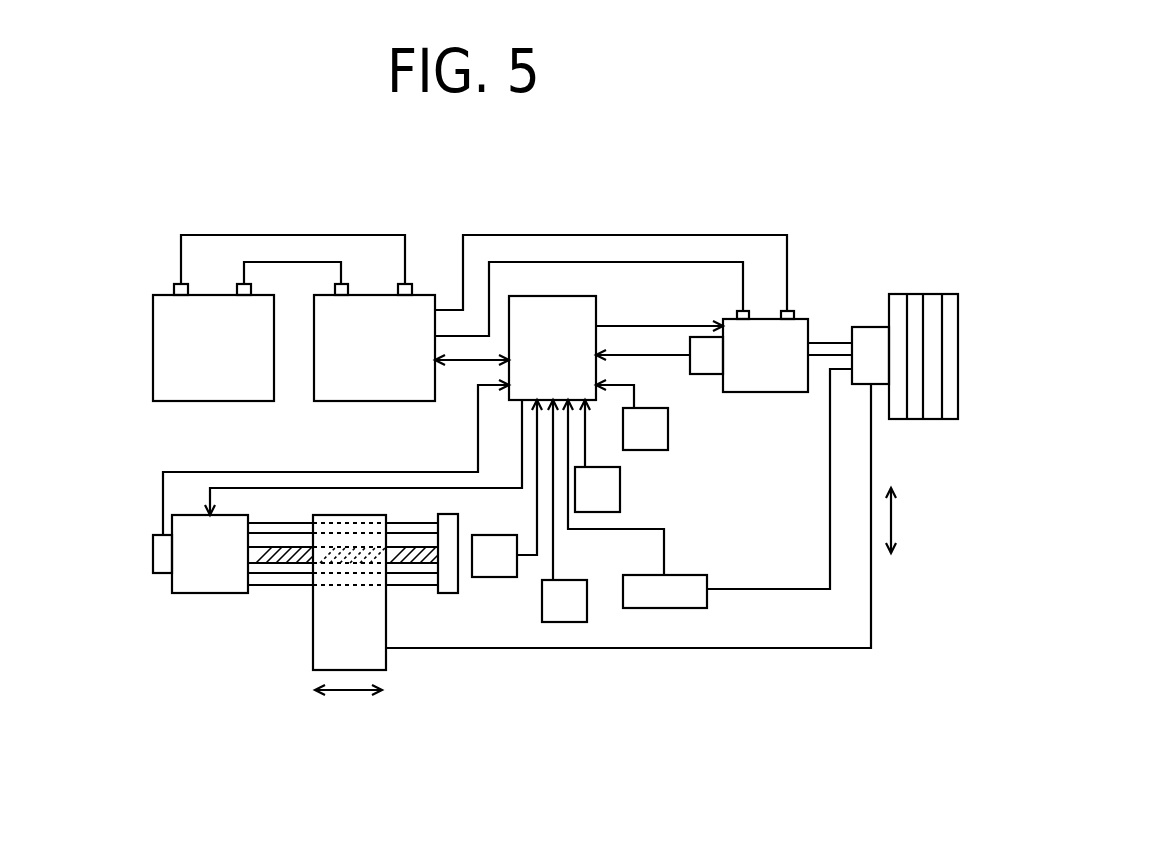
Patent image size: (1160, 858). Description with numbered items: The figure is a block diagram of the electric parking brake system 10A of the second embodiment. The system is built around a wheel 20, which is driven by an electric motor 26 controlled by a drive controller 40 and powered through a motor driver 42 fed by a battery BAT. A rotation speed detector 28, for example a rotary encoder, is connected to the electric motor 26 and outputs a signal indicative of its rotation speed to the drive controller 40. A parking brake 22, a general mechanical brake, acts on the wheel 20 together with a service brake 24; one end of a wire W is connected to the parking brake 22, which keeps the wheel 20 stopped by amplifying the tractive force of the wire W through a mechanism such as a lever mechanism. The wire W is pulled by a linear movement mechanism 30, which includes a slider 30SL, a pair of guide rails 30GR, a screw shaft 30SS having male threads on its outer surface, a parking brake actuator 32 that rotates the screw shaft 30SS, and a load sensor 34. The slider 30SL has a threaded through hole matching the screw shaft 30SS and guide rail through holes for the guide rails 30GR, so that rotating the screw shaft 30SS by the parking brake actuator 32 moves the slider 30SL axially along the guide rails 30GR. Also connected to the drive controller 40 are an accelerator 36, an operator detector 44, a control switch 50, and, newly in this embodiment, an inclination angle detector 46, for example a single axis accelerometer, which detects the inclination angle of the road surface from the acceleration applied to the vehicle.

The electric parking brake system 10A is at (568, 219).
The battery BAT is at (153, 367).
The motor driver 42 is at (314, 367).
The drive controller 40 is at (596, 308).
The rotation speed detector 28 is at (710, 374).
The electric motor 26 is at (778, 392).
The parking brake 22 is at (872, 327).
The wheel 20 is at (914, 294).
The control switch 50 is at (652, 450).
The inclination angle detector 46 is at (620, 497).
The accelerator 36 is at (572, 580).
The service brake 24 is at (682, 575).
The operator detector 44 is at (493, 577).
The wire W is at (760, 648).
The linear movement mechanism 30 is at (307, 571).
The load sensor 34 is at (153, 555).
The parking brake actuator 32 is at (190, 593).
The guide rails 30GR is at (262, 585).
The screw shaft 30SS is at (292, 563).
The slider 30SL is at (386, 658).